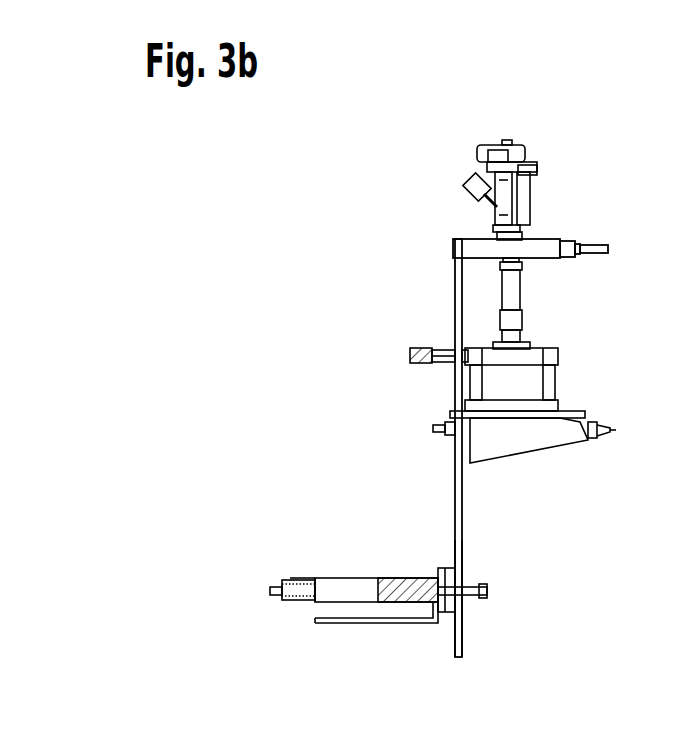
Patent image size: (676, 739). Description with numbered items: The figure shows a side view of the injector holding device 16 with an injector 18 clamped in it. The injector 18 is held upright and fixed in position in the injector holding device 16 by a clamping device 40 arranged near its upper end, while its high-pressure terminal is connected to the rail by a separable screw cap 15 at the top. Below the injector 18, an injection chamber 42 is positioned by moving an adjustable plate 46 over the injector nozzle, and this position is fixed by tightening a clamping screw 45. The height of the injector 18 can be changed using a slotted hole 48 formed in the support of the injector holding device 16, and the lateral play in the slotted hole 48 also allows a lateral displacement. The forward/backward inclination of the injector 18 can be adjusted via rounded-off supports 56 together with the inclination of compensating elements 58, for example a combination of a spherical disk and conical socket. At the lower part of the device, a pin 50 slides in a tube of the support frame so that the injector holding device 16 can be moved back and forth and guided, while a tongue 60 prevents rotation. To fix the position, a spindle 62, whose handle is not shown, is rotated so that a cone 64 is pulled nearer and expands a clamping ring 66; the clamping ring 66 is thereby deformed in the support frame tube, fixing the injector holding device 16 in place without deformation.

The screw cap 15 is at (553, 127).
The injector holding device 16 is at (380, 213).
The injector 18 is at (510, 293).
The clamping device 40 is at (548, 250).
The injection chamber 42 is at (540, 380).
The clamping screw 45 is at (613, 433).
The adjustable plate 46 is at (497, 443).
The slotted hole 48 is at (495, 552).
The pin 50 is at (363, 538).
The rounded-off supports 56 is at (450, 572).
The compensating elements 58 is at (502, 607).
The tongue 60 is at (360, 624).
The spindle 62 is at (482, 596).
The cone 64 is at (314, 578).
The clamping ring 66 is at (293, 604).